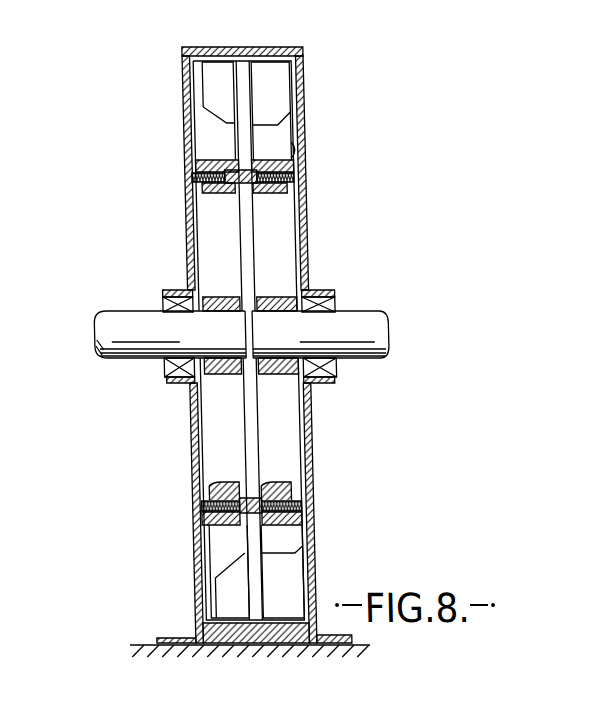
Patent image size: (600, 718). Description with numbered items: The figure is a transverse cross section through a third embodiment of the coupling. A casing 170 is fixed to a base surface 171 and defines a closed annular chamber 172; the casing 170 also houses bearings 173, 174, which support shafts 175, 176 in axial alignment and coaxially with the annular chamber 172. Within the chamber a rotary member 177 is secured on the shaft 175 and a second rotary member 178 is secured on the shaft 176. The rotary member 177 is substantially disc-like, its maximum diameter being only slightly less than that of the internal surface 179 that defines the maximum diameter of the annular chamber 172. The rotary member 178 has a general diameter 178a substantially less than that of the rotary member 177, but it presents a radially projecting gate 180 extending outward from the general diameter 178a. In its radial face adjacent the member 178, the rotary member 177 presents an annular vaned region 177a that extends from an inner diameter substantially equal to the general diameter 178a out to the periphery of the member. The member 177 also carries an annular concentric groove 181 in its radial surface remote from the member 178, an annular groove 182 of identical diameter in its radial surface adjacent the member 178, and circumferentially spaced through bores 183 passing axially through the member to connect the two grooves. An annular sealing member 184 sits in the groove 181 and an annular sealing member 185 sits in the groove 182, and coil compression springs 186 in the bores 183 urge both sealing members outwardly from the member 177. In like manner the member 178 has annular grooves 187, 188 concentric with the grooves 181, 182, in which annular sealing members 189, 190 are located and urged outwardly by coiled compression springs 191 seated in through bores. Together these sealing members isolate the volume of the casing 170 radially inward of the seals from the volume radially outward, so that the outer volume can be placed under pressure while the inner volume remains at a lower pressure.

The casing 170 is at (189, 432).
The base surface 171 is at (243, 648).
The annular chamber 172 is at (196, 261).
The bearing 173 is at (166, 300).
The bearing 174 is at (331, 300).
The shaft 175 is at (99, 318).
The shaft 176 is at (395, 318).
The rotary member 177 is at (214, 405).
The annular vaned region 177a is at (228, 80).
The rotary member 178 is at (289, 410).
The general diameter 178a is at (282, 125).
The internal surface 179 is at (250, 60).
The gate 180 is at (286, 80).
The annular concentric groove 181 is at (204, 497).
The annular groove 182 is at (232, 528).
The through bores 183 is at (206, 522).
The annular sealing member 184 is at (209, 168).
The annular sealing member 185 is at (217, 158).
The coil compression springs 186 is at (216, 196).
The annular groove 187 is at (274, 481).
The annular groove 188 is at (295, 143).
The annular sealing member 189 is at (252, 195).
The annular sealing member 190 is at (299, 175).
The coiled compression springs 191 is at (284, 197).